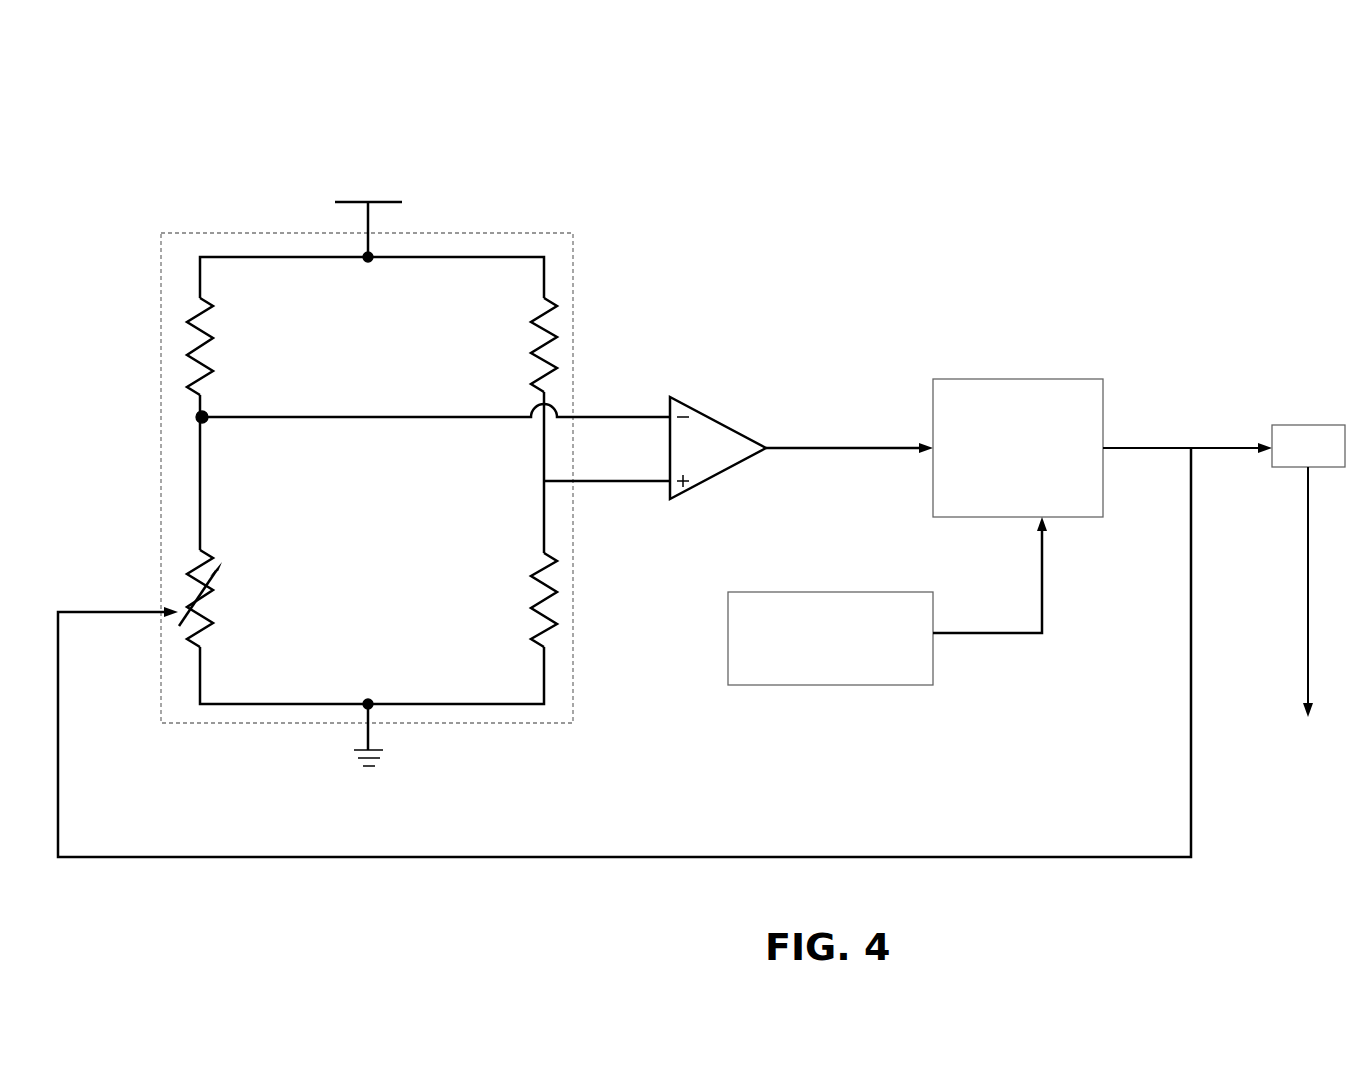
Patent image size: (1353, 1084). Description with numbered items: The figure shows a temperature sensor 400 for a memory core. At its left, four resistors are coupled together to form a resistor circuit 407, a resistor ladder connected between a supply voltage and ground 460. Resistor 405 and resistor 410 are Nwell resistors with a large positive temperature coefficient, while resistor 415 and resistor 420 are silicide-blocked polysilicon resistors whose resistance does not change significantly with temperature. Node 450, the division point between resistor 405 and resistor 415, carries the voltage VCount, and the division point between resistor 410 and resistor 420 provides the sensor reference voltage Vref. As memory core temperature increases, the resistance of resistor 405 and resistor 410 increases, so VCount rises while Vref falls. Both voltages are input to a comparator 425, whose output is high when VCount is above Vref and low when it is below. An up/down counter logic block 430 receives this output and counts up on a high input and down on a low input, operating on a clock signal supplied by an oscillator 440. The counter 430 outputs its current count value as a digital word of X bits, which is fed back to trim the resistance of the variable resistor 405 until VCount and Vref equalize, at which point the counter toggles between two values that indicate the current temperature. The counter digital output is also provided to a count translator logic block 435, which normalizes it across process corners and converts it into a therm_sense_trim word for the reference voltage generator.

The sensor 400 is at (197, 88).
The resistor circuit 407 is at (205, 230).
The resistor 415 is at (222, 346).
The resistor 410 is at (517, 345).
The resistor 405 is at (218, 598).
The resistor 420 is at (520, 600).
The node 450 is at (202, 417).
The ground 460 is at (384, 750).
The comparator 425 is at (718, 448).
The up/down counter logic block 430 is at (1018, 448).
The count translator logic block 435 is at (1308, 571).
The oscillator 440 is at (830, 638).